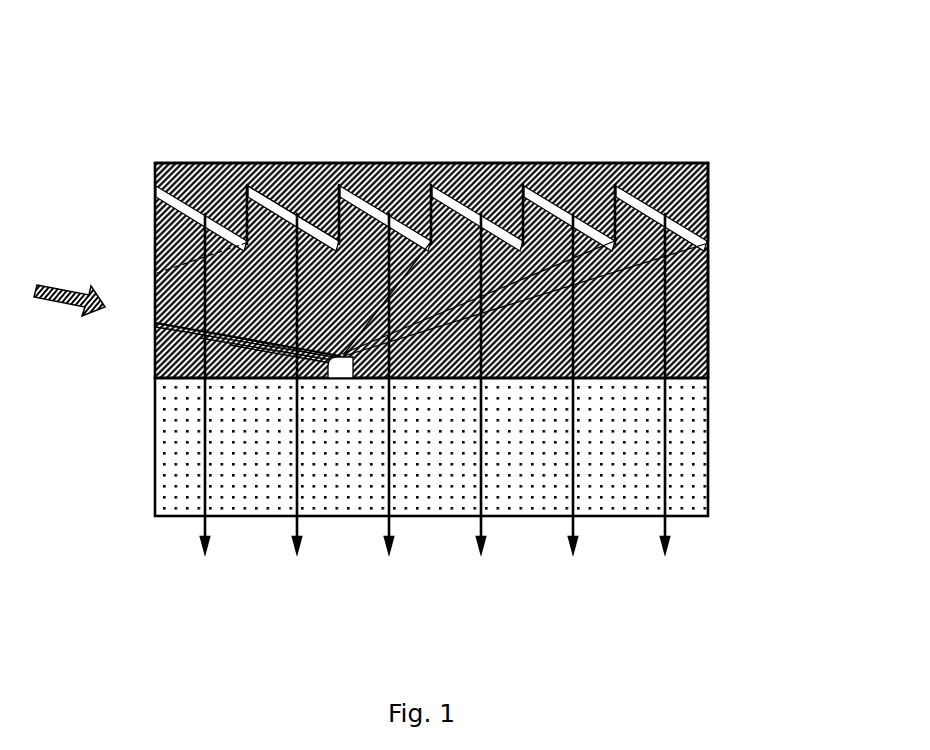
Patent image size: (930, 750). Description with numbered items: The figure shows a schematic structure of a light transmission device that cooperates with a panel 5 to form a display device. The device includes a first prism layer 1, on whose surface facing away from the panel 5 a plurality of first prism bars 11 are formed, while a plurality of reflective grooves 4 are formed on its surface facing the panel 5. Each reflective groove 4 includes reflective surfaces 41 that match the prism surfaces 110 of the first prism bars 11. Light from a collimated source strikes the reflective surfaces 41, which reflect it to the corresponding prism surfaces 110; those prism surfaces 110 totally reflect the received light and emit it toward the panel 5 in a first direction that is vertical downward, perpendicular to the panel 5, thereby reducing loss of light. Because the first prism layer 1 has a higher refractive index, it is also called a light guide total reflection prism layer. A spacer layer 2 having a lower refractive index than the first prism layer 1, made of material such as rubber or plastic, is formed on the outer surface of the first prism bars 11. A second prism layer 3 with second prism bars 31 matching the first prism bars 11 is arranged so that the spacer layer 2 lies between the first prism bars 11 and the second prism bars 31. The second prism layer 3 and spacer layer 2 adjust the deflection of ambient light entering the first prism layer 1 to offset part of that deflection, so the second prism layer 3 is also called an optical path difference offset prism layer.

The first prism layer 1 is at (680, 333).
The spacer layer 2 is at (708, 252).
The second prism layer 3 is at (703, 184).
The second prism bars 31 is at (710, 211).
The first prism bars 11 is at (267, 165).
The prism surfaces 110 is at (312, 180).
The reflective grooves 4 is at (345, 372).
The reflective surfaces 41 is at (320, 373).
The panel 5 is at (697, 460).